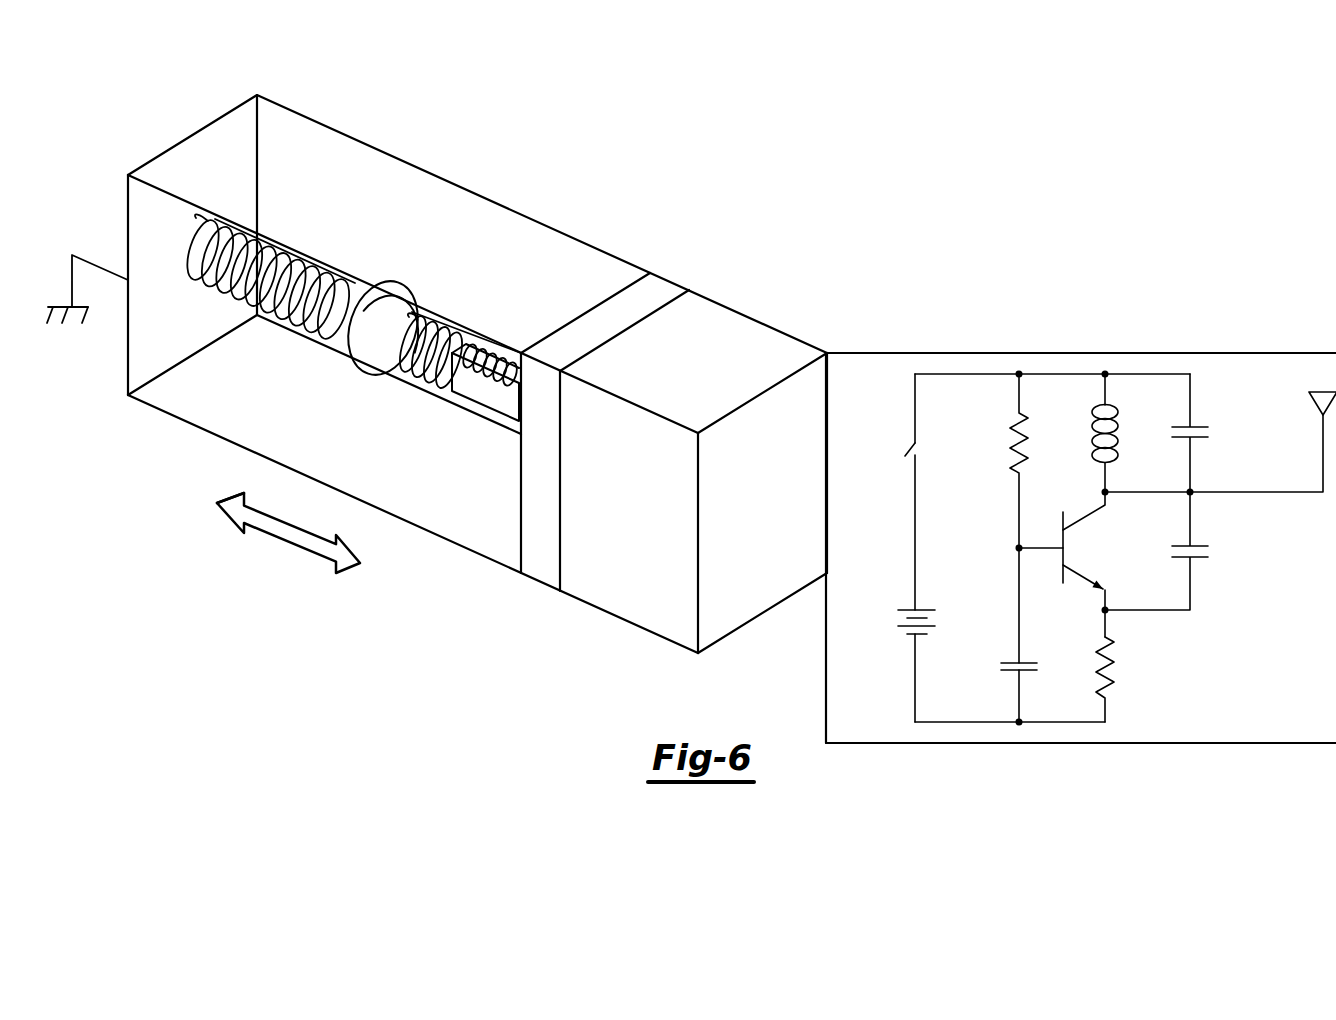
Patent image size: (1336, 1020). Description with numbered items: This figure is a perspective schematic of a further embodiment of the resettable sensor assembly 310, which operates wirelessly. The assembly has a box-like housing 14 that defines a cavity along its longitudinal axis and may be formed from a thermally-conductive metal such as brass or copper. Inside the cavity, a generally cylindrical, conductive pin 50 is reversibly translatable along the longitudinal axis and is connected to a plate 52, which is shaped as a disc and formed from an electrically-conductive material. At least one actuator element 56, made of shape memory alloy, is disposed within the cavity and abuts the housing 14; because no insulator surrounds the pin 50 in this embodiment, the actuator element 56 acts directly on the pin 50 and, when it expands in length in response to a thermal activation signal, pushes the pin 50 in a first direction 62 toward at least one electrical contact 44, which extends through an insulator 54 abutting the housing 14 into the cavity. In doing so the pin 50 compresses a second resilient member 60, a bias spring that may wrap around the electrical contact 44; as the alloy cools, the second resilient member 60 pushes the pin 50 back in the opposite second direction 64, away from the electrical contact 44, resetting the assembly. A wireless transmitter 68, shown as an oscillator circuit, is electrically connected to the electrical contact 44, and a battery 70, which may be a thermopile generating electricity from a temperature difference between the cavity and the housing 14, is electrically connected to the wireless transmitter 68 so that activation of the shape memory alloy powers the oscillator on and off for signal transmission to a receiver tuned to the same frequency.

The housing 14 is at (357, 175).
The resettable sensor assembly 310 is at (668, 178).
The insulator 54 is at (653, 290).
The battery 70 is at (752, 592).
The actuator element 56 is at (223, 293).
The pin 50 is at (332, 320).
The plate 52 is at (380, 347).
The second resilient member 60 is at (463, 333).
The electrical contact 44 is at (477, 387).
The first direction 62 is at (318, 535).
The second direction 64 is at (253, 528).
The wireless transmitter 68 is at (1068, 352).